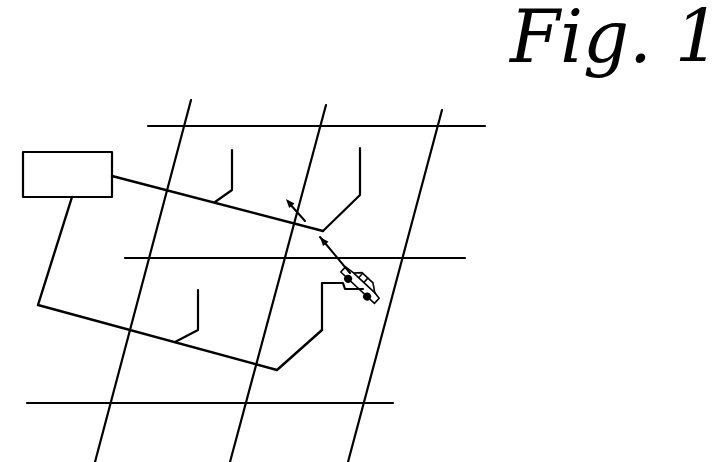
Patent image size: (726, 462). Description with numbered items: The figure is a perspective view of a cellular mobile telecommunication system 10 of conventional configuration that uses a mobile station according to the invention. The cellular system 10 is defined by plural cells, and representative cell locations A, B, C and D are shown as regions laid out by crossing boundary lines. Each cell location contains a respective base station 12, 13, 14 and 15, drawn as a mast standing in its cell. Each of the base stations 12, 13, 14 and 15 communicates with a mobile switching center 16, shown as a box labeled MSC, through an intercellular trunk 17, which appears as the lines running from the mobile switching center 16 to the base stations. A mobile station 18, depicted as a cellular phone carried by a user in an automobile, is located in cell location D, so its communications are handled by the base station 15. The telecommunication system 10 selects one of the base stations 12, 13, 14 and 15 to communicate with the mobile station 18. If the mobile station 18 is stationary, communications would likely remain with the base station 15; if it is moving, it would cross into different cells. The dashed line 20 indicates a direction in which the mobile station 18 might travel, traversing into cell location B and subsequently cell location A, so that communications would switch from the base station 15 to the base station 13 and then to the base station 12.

The cellular mobile telecommunication system 10 is at (489, 162).
The base station 12 is at (233, 185).
The base station 13 is at (362, 182).
The base station 14 is at (197, 322).
The base station 15 is at (325, 320).
The mobile switching center 16 is at (47, 152).
The intercellular trunk 17 is at (145, 184).
The mobile station 18 is at (390, 281).
The dashed line 20 is at (322, 238).